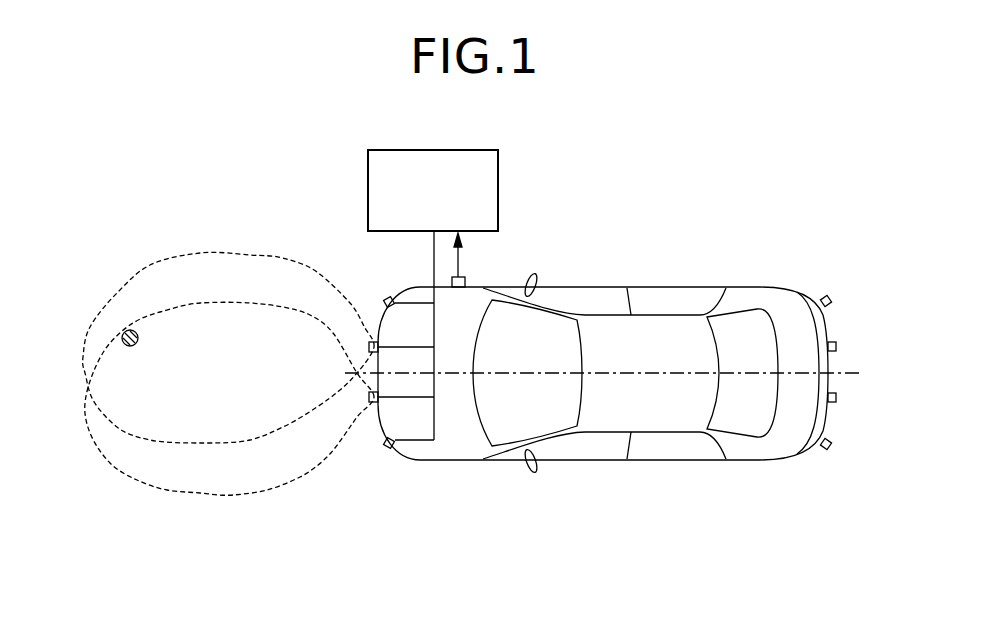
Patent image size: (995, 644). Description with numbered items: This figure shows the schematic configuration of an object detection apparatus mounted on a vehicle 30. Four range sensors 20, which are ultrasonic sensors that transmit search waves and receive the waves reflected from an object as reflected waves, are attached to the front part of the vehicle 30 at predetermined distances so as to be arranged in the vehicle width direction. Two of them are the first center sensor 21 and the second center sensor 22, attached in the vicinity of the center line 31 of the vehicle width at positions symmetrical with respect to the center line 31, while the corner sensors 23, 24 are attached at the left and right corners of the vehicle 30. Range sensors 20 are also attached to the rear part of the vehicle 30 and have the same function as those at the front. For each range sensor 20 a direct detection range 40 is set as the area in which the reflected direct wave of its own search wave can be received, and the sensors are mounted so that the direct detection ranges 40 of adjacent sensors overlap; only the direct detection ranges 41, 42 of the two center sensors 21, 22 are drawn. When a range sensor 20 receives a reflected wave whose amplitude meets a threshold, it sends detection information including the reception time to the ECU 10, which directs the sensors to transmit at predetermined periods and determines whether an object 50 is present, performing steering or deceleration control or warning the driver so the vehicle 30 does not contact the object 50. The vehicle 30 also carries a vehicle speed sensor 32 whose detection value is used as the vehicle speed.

The ECU 10 is at (460, 150).
The range sensor 20 is at (597, 357).
The first center sensor 21 is at (372, 340).
The second center sensor 22 is at (372, 406).
The corner sensor 23 is at (388, 296).
The corner sensor 24 is at (390, 452).
The vehicle 30 is at (653, 286).
The center line 31 is at (619, 373).
The vehicle speed sensor 32 is at (466, 281).
The direct detection range 40 is at (229, 374).
The direct detection range 41 is at (127, 268).
The direct detection range 42 is at (130, 480).
The object 50 is at (122, 333).